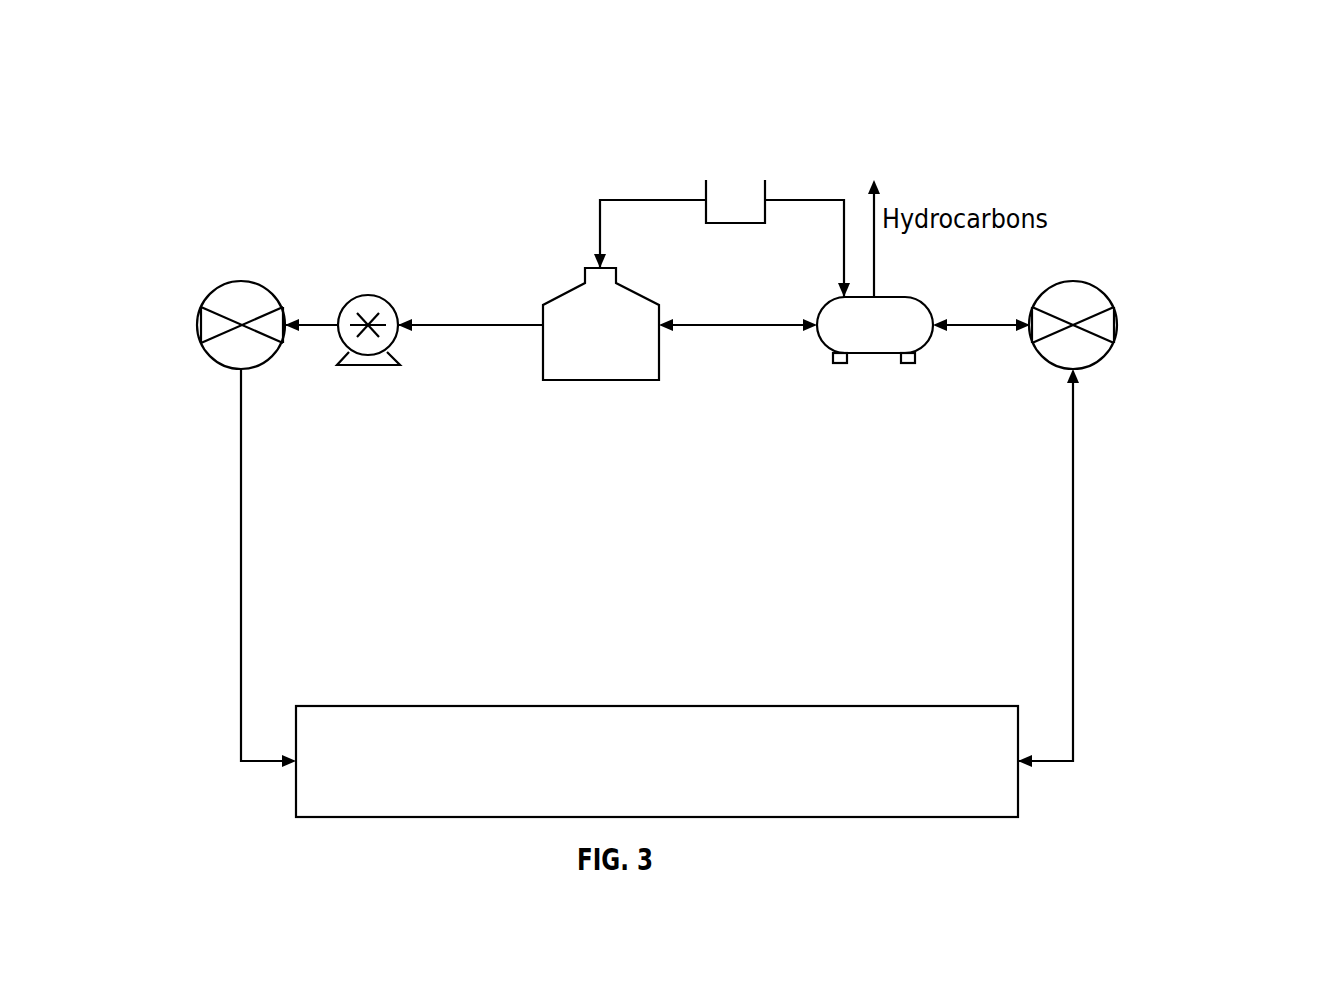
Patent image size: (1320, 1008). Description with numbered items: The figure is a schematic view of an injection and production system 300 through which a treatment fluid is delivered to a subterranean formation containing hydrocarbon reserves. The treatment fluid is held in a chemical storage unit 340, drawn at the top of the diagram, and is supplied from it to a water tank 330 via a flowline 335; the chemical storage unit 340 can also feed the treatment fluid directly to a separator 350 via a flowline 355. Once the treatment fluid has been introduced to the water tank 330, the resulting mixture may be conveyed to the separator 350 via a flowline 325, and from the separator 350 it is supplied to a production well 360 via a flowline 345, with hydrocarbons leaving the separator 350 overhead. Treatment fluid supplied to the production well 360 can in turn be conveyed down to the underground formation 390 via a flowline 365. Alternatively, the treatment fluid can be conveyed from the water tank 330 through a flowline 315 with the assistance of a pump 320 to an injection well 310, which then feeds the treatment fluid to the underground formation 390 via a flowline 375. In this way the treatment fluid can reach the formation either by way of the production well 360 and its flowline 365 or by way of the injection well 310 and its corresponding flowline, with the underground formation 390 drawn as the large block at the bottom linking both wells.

The injection and production system 300 is at (172, 82).
The injection well 310 is at (212, 365).
The flowline 315 is at (473, 327).
The pump 320 is at (372, 295).
The flowline 325 is at (737, 327).
The water tank 330 is at (600, 380).
The flowline 335 is at (624, 200).
The chemical storage unit 340 is at (731, 190).
The flowline 345 is at (977, 325).
The separator 350 is at (872, 363).
The flowline 355 is at (836, 200).
The production well 360 is at (1102, 362).
The flowline 365 is at (1073, 543).
The flowline 375 is at (241, 543).
The underground formation 390 is at (657, 706).